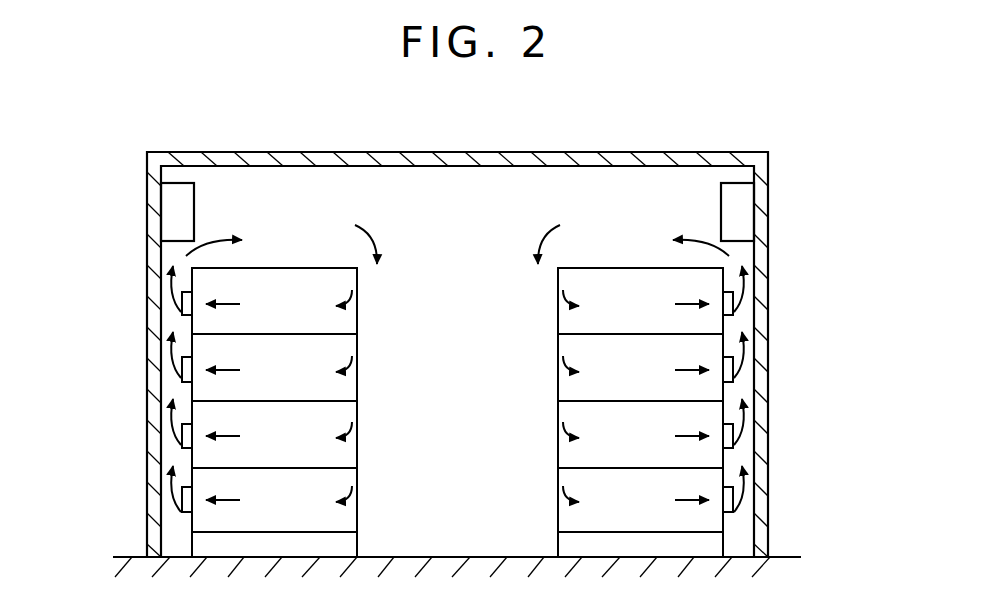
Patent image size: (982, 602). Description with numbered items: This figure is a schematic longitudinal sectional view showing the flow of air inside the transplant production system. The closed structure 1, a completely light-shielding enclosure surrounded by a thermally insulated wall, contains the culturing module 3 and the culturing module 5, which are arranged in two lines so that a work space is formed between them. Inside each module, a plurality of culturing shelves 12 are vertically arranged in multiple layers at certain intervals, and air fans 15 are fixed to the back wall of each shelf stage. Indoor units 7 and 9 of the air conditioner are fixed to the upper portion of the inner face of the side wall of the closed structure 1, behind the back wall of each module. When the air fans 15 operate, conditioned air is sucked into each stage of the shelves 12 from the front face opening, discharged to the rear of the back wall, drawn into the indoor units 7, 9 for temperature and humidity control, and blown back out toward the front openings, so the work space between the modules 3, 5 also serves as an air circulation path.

The closed structure 1 is at (578, 157).
The culturing module 3 is at (627, 262).
The culturing module 5 is at (288, 262).
The indoor unit 7 is at (740, 213).
The indoor unit 9 is at (172, 210).
The culturing shelf 12 is at (262, 338).
The air fan 15 is at (183, 309).